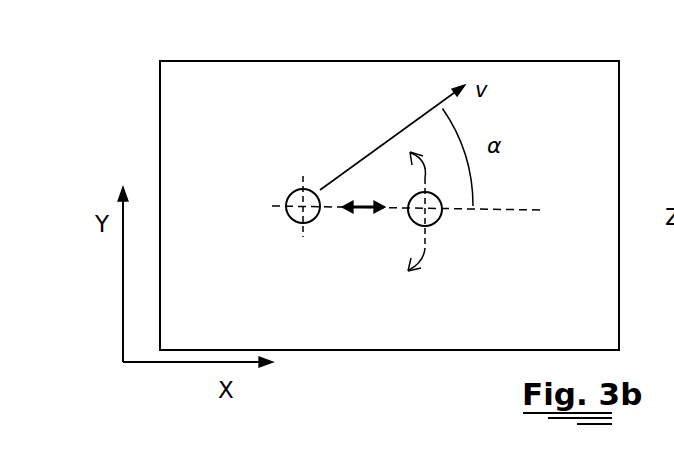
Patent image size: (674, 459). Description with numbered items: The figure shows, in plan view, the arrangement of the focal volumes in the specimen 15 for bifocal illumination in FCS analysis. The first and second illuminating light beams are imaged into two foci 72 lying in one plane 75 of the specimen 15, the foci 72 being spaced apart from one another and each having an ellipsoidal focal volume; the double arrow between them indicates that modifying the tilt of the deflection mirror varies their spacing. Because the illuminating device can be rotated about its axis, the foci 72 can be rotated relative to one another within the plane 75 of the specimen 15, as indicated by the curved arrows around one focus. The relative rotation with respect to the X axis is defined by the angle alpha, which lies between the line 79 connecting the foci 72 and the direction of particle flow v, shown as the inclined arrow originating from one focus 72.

The specimen 15 is at (620, 105).
The foci 72 is at (285, 207).
The plane 75 is at (232, 90).
The line connecting the foci 79 is at (517, 212).